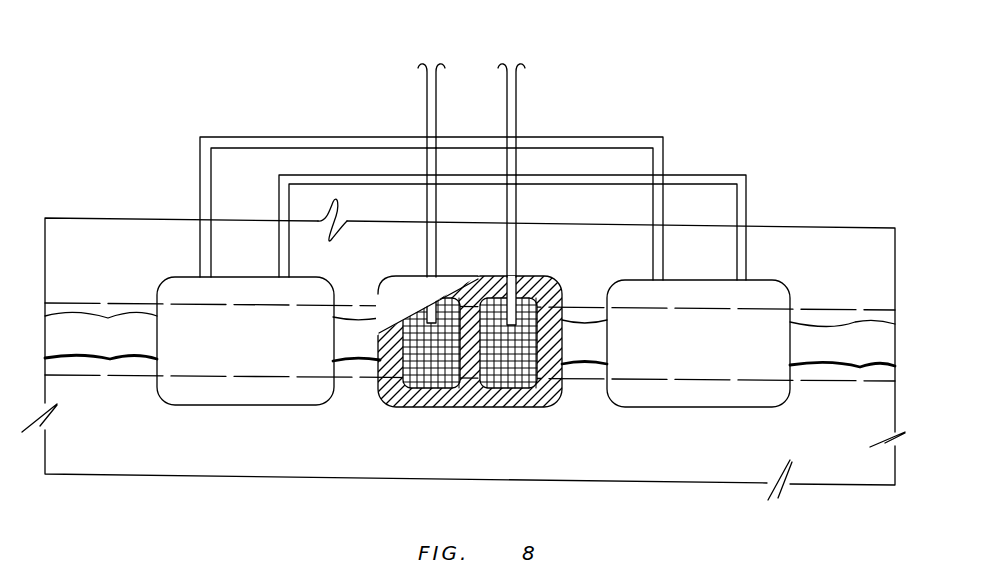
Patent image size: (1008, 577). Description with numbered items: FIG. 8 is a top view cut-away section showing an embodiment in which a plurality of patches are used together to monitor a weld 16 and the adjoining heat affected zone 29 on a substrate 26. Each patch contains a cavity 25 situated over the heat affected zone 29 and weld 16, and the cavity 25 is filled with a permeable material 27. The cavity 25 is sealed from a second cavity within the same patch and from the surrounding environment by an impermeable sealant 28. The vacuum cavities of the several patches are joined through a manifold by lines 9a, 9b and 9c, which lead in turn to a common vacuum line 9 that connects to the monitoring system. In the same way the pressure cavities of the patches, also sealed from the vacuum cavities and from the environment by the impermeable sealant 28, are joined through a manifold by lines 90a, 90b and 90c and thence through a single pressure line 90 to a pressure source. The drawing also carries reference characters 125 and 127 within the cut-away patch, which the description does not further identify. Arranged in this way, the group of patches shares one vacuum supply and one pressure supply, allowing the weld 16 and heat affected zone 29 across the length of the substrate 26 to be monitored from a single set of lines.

The vacuum line 9 is at (427, 96).
The pressure line 90 is at (516, 97).
The manifold line 9a is at (200, 176).
The manifold line 9b is at (427, 212).
The manifold line 9c is at (655, 216).
The pressure manifold line 90a is at (280, 210).
The pressure manifold line 90b is at (507, 212).
The pressure manifold line 90c is at (737, 218).
The weld 16 is at (866, 360).
The cavity 25 is at (392, 404).
The substrate 26 is at (622, 469).
The permeable material 27 is at (437, 390).
The impermeable sealant 28 is at (280, 397).
The heat affected zone 29 is at (125, 376).
The second electrode 125 is at (525, 388).
The lead wire connection to second electrode 127 is at (506, 400).